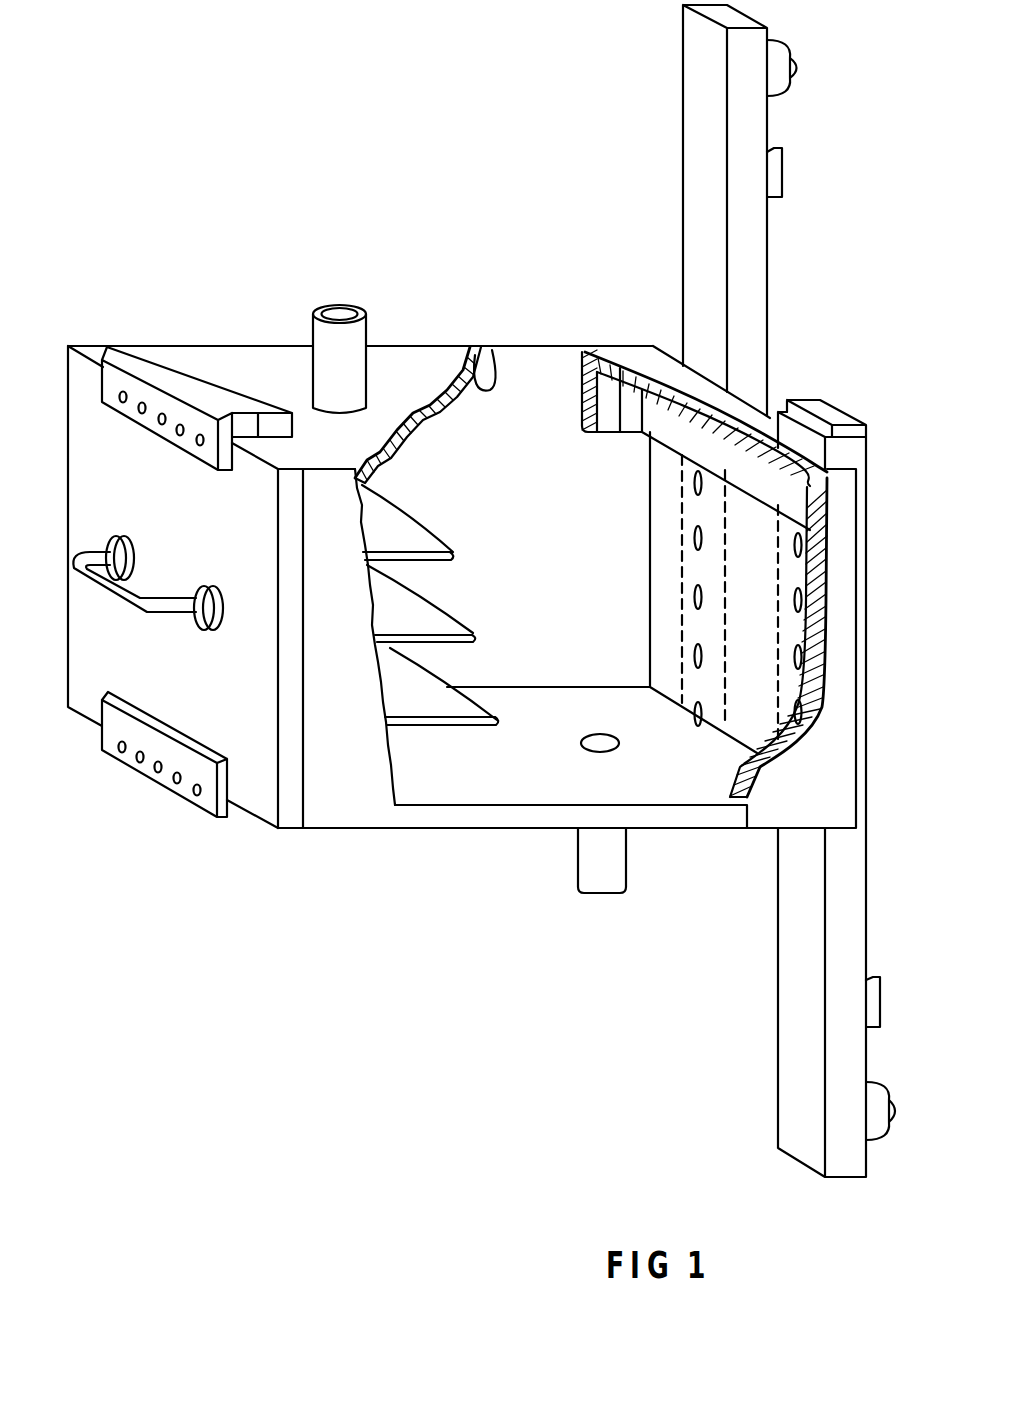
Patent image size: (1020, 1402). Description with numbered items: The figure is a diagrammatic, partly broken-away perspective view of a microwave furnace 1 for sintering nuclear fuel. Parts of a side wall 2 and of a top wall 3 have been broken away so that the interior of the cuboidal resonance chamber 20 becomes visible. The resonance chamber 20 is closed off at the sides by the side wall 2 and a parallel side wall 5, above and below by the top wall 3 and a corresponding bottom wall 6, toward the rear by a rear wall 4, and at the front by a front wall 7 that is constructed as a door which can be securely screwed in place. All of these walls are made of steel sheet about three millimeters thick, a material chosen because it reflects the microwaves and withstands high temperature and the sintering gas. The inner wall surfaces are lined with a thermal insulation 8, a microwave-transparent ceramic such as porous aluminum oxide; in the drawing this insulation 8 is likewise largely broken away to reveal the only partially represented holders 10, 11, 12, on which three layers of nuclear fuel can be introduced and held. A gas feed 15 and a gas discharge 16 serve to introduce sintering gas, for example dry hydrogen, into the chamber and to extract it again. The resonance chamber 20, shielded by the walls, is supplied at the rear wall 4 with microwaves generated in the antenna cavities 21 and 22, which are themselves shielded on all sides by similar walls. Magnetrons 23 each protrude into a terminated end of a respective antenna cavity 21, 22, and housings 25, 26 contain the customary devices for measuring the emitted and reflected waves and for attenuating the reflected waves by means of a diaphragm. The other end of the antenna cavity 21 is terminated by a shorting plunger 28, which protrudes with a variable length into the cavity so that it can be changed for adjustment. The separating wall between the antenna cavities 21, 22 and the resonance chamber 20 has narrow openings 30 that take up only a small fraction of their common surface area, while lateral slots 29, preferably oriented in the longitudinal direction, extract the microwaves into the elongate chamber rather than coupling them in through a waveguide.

The microwave furnace 1 is at (150, 320).
The side wall 2 is at (333, 800).
The top wall 3 is at (402, 373).
The rear wall 4 is at (758, 556).
The side wall 5 is at (516, 370).
The bottom wall 6 is at (471, 830).
The front wall 7 is at (93, 683).
The thermal insulation 8 is at (487, 350).
The holder 10 is at (433, 693).
The holder 11 is at (433, 623).
The holder 12 is at (418, 546).
The gas feed 15 is at (604, 878).
The gas discharge 16 is at (315, 329).
The resonance chamber 20 is at (663, 777).
The antenna cavity 21 is at (847, 912).
The antenna cavity 22 is at (752, 240).
The magnetron 23 is at (775, 54).
The housing 25 is at (868, 1000).
The housing 26 is at (773, 173).
The shorting plunger 28 is at (827, 410).
The lateral slots 29 is at (803, 660).
The openings 30 is at (693, 540).